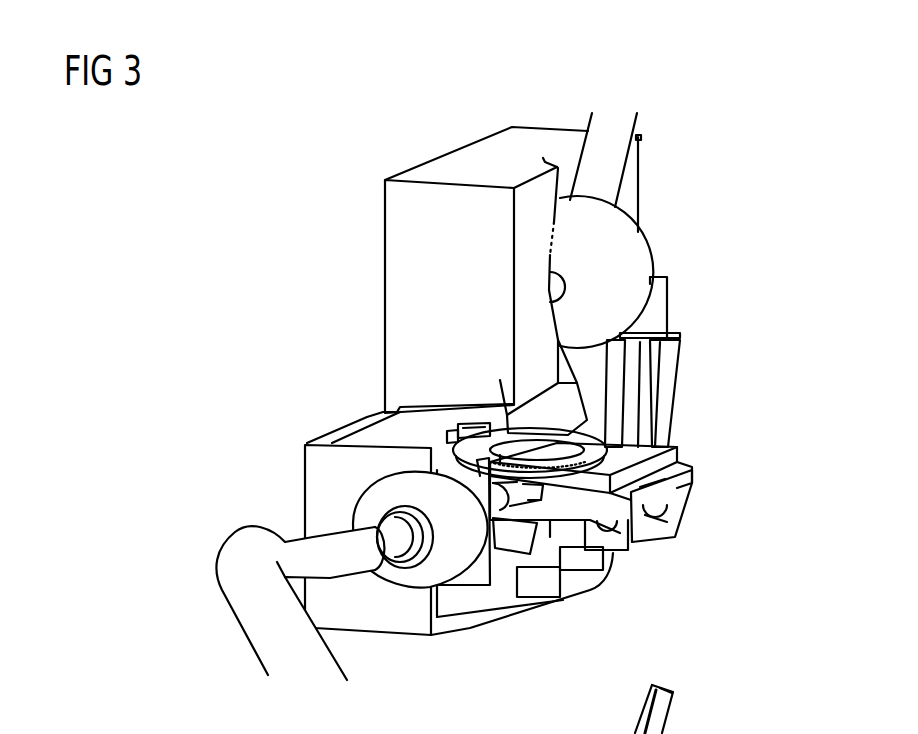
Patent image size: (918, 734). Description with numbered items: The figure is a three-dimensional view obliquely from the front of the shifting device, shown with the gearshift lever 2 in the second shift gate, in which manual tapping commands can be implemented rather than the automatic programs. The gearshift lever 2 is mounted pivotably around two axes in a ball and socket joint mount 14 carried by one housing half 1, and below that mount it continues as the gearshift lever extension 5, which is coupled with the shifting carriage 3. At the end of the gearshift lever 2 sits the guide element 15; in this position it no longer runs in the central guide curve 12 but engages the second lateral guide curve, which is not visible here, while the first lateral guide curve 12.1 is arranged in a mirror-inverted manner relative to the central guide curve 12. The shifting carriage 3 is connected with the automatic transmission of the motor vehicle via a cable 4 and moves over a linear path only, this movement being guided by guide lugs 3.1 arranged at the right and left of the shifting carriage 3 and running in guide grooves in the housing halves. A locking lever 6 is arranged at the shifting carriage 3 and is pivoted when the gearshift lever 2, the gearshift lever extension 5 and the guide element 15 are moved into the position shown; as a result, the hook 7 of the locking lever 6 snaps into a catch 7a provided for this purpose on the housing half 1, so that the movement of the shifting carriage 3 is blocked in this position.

The housing half 1 is at (445, 216).
The gearshift lever 2 is at (603, 150).
The ball and socket joint mount 14 is at (603, 252).
The gearshift lever extension 5 is at (600, 347).
The guide element 15 is at (603, 400).
The central guide curve 12 is at (643, 412).
The hook 7 is at (482, 428).
The catch 7a is at (460, 440).
The locking lever 6 is at (415, 439).
The guide lugs 3.1 is at (690, 465).
The first lateral guide curve 12.1 is at (690, 496).
The shifting carriage 3 is at (673, 533).
The cable 4 is at (500, 483).